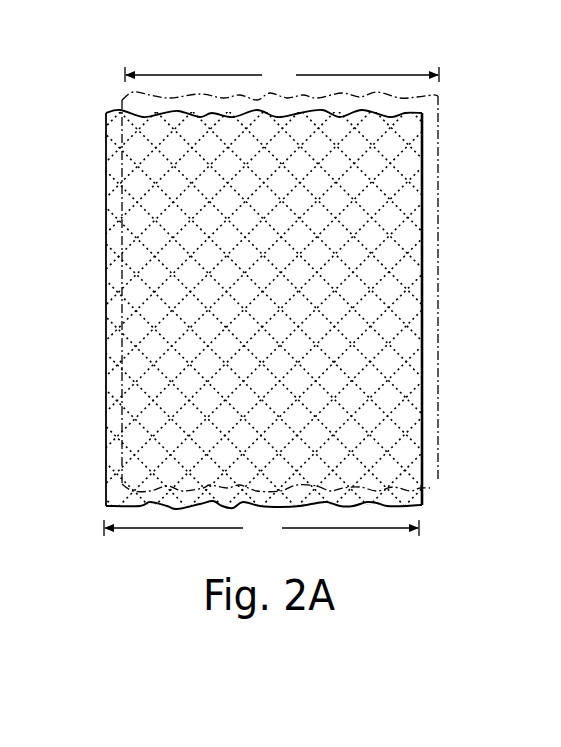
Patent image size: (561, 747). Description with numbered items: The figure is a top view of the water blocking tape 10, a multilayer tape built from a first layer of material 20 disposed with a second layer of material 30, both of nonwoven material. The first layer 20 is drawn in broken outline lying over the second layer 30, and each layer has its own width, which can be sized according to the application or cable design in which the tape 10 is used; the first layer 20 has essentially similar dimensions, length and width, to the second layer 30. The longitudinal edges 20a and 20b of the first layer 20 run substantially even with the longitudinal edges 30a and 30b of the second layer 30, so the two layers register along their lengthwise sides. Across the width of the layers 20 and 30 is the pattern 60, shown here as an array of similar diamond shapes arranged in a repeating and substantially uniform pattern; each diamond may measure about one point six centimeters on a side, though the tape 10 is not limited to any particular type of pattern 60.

The water blocking tape 10 is at (121, 44).
The first layer of material 20 is at (273, 292).
The longitudinal edge of the first layer 20a is at (122, 455).
The longitudinal edge of the first layer 20b is at (438, 460).
The second layer of material 30 is at (264, 309).
The longitudinal edge of the second layer 30a is at (106, 395).
The longitudinal edge of the second layer 30b is at (422, 405).
The pattern 60 is at (100, 193).